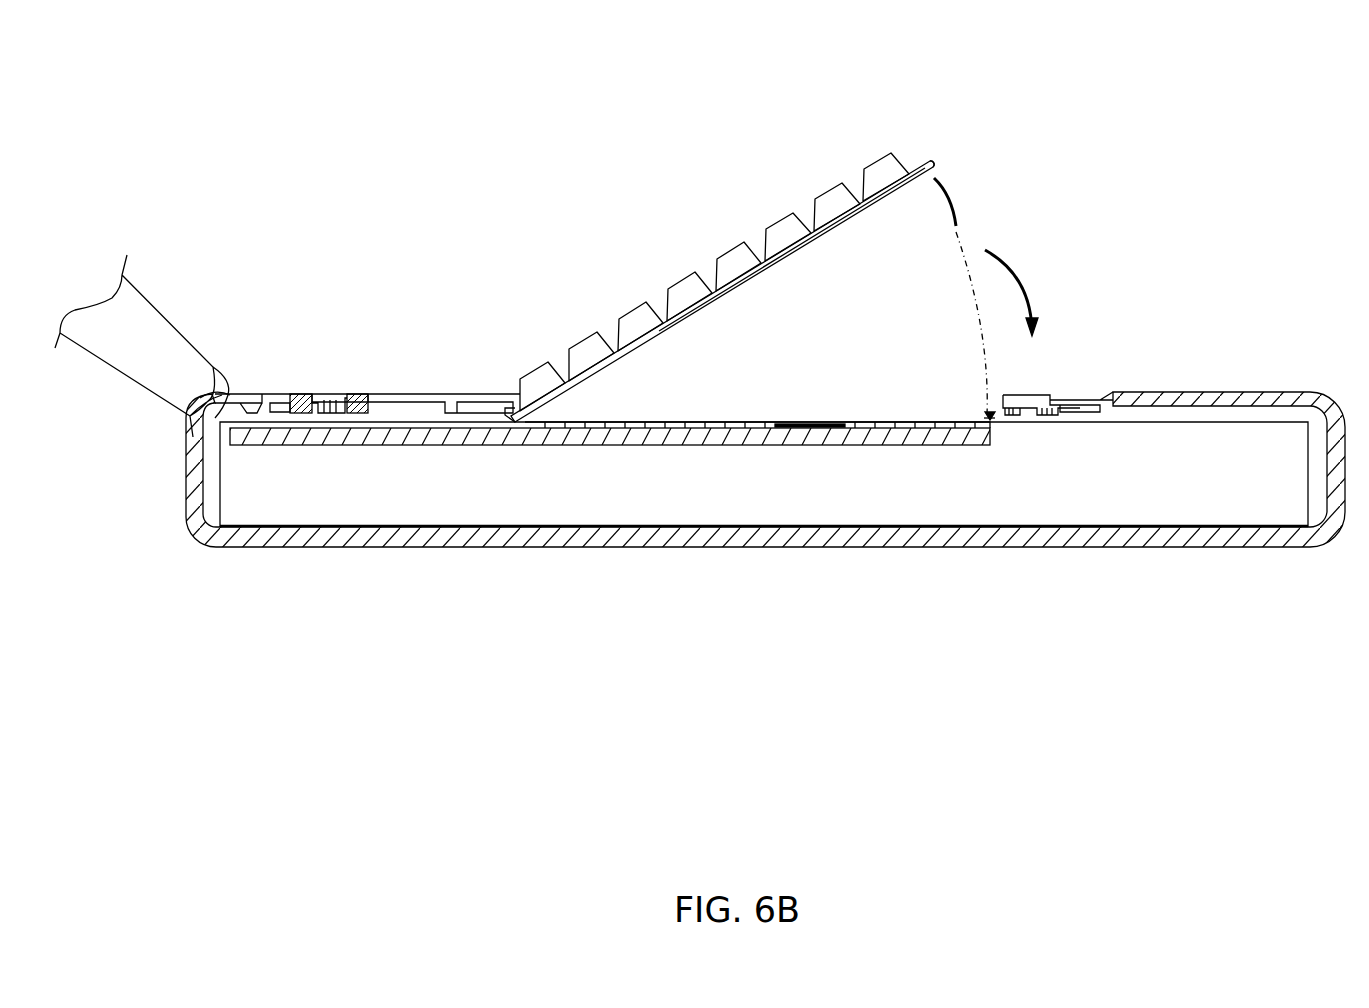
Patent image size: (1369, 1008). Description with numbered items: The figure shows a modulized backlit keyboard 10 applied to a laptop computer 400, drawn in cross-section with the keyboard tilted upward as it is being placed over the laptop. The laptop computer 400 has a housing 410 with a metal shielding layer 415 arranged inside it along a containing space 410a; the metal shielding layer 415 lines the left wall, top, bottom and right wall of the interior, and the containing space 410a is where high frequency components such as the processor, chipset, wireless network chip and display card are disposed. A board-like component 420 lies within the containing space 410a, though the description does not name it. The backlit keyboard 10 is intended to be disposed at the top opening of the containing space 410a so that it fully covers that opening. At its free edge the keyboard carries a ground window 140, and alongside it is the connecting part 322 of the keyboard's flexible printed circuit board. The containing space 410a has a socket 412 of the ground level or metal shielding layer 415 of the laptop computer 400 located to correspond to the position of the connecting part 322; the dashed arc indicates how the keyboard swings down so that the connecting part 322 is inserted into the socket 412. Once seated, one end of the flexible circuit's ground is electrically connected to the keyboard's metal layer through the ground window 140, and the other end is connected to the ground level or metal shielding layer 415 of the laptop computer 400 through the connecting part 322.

The laptop computer 400 is at (236, 75).
The backlit keyboard 10 is at (724, 240).
The ground window 140 is at (938, 178).
The connecting part 322 is at (955, 210).
The socket 412 is at (987, 416).
The housing 410 is at (520, 535).
The containing space 410a is at (912, 497).
The metal shielding layer 415 is at (388, 527).
The circuit board 420 is at (643, 438).